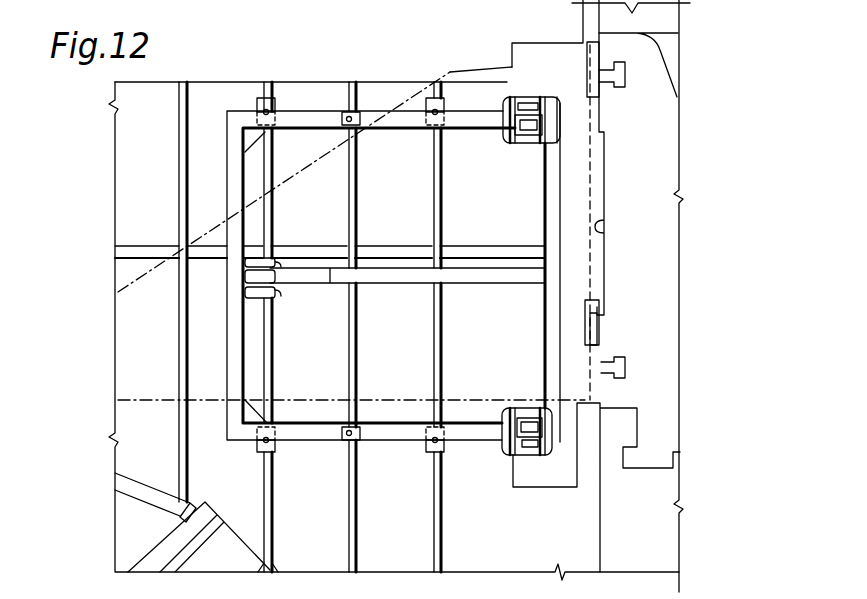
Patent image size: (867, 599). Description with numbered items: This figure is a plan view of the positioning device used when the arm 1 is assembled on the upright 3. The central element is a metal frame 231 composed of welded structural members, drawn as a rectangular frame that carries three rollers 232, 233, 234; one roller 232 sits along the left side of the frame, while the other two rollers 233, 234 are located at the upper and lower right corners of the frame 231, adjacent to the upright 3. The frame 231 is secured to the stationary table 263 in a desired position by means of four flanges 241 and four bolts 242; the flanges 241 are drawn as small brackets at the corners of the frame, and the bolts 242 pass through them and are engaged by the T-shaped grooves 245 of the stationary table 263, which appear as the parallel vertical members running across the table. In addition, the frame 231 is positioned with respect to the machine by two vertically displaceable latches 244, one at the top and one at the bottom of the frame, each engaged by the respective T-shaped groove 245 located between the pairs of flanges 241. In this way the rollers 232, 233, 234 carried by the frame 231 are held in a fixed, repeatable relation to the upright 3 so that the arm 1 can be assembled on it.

The arm 1 is at (534, 42).
The upright 3 is at (604, 227).
The metal frame 231 is at (302, 430).
The roller 232 is at (244, 277).
The roller 233 is at (527, 124).
The roller 234 is at (524, 425).
The flange 241 is at (276, 99).
The bolt 242 is at (271, 108).
The vertically displaceable latch 244 is at (353, 115).
The T-shaped groove 245 is at (350, 507).
The stationary table 263 is at (216, 96).